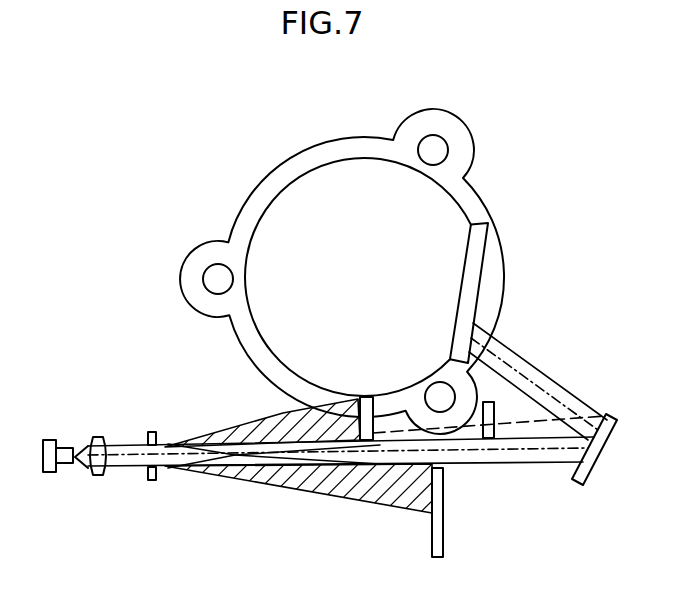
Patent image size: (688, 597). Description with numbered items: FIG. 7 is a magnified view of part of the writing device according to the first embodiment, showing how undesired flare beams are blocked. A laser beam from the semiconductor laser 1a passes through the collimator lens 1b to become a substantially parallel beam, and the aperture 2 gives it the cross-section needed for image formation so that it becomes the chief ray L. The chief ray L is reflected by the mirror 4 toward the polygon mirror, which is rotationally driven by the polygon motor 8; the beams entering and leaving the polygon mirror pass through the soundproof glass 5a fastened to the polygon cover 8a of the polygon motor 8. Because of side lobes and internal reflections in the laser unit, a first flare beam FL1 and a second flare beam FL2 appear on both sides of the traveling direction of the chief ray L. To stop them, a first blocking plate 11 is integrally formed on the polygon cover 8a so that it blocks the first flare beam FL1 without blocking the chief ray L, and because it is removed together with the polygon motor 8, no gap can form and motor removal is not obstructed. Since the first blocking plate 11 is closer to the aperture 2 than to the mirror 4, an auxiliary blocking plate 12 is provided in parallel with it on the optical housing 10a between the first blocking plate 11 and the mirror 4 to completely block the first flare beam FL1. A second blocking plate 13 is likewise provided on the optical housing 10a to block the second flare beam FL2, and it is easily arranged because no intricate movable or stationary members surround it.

The semiconductor laser 1a is at (65, 465).
The collimator lens 1b is at (98, 477).
The aperture 2 is at (150, 482).
The mirror 4 is at (587, 483).
The soundproof glass 5a is at (482, 227).
The polygon motor 8 is at (257, 197).
The polygon cover 8a is at (253, 322).
The optical housing 10a is at (240, 553).
The first blocking plate 11 is at (365, 442).
The auxiliary blocking plate 12 is at (492, 440).
The second blocking plate 13 is at (444, 546).
The chief ray L is at (548, 370).
The first flare beam FL1 is at (270, 422).
The second flare beam FL2 is at (293, 492).